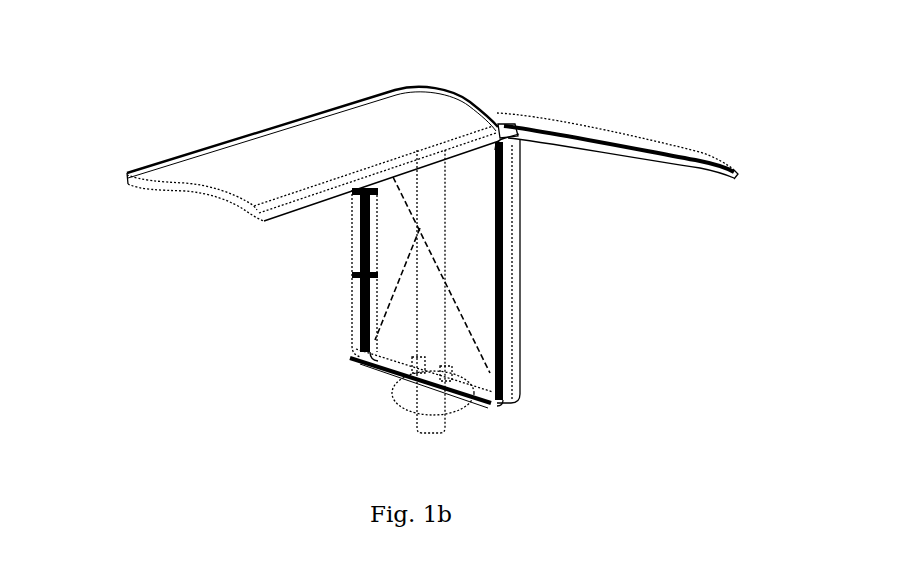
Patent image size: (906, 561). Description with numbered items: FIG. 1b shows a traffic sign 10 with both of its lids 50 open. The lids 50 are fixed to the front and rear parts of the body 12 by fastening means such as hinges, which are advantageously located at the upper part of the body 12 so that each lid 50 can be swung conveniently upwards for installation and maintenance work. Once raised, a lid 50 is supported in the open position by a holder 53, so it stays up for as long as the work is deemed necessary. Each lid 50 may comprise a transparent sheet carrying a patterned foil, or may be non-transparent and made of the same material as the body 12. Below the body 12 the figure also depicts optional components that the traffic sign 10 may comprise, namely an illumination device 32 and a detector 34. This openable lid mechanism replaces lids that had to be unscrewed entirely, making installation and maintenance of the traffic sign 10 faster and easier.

The traffic sign 10 is at (140, 119).
The lid 50 is at (318, 130).
The body 12 is at (355, 358).
The holder 53 is at (395, 279).
The illumination device 32 is at (457, 403).
The detector 34 is at (400, 393).